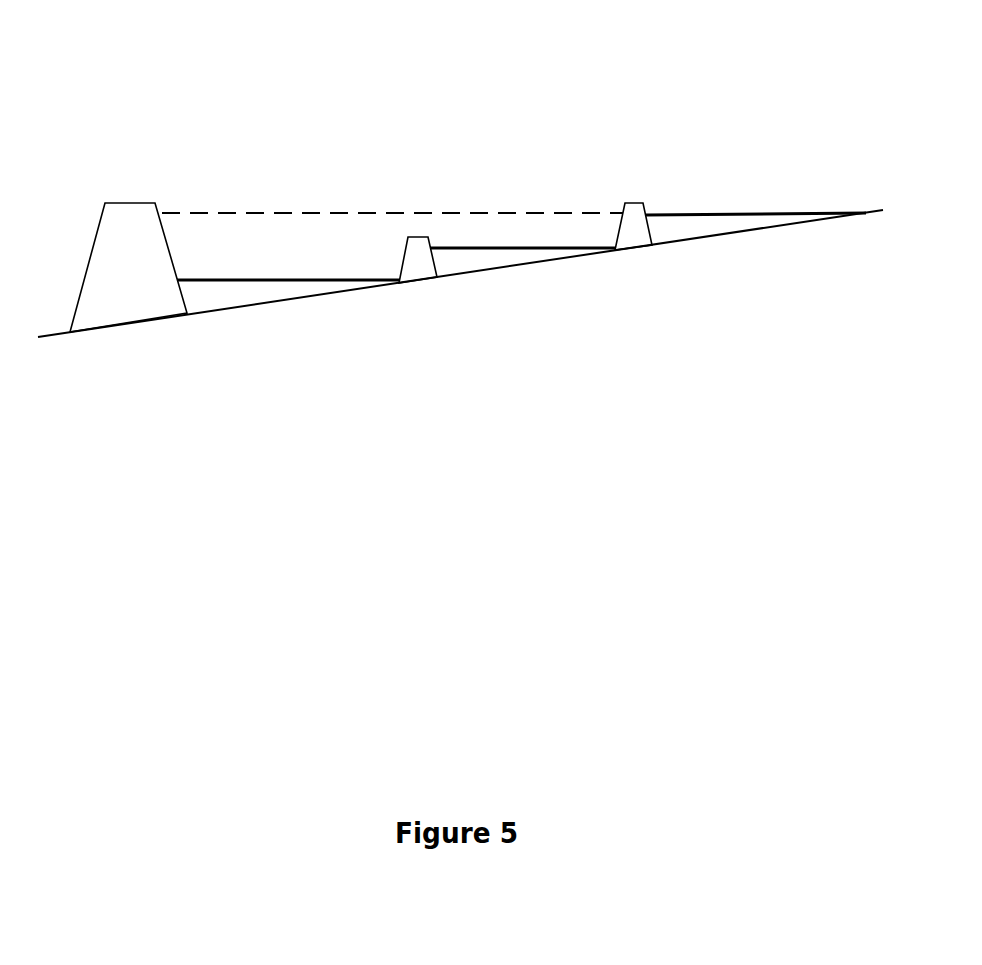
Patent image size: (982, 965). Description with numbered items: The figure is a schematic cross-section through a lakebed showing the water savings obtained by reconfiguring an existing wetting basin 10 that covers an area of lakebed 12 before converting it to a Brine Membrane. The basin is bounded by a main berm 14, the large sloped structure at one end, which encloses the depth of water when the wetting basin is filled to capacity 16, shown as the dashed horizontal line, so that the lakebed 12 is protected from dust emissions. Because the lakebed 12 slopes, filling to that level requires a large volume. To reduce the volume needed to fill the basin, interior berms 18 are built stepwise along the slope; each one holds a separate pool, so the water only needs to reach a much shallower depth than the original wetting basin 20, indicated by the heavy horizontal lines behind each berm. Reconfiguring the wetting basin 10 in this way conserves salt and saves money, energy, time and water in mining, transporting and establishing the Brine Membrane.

The existing wetting basin 10 is at (444, 104).
The lakebed 12 is at (71, 334).
The main berm 14 is at (160, 212).
The depth of water when filled to capacity 16 is at (340, 213).
The interior berms 18 is at (432, 242).
The shallower depth 20 is at (320, 283).